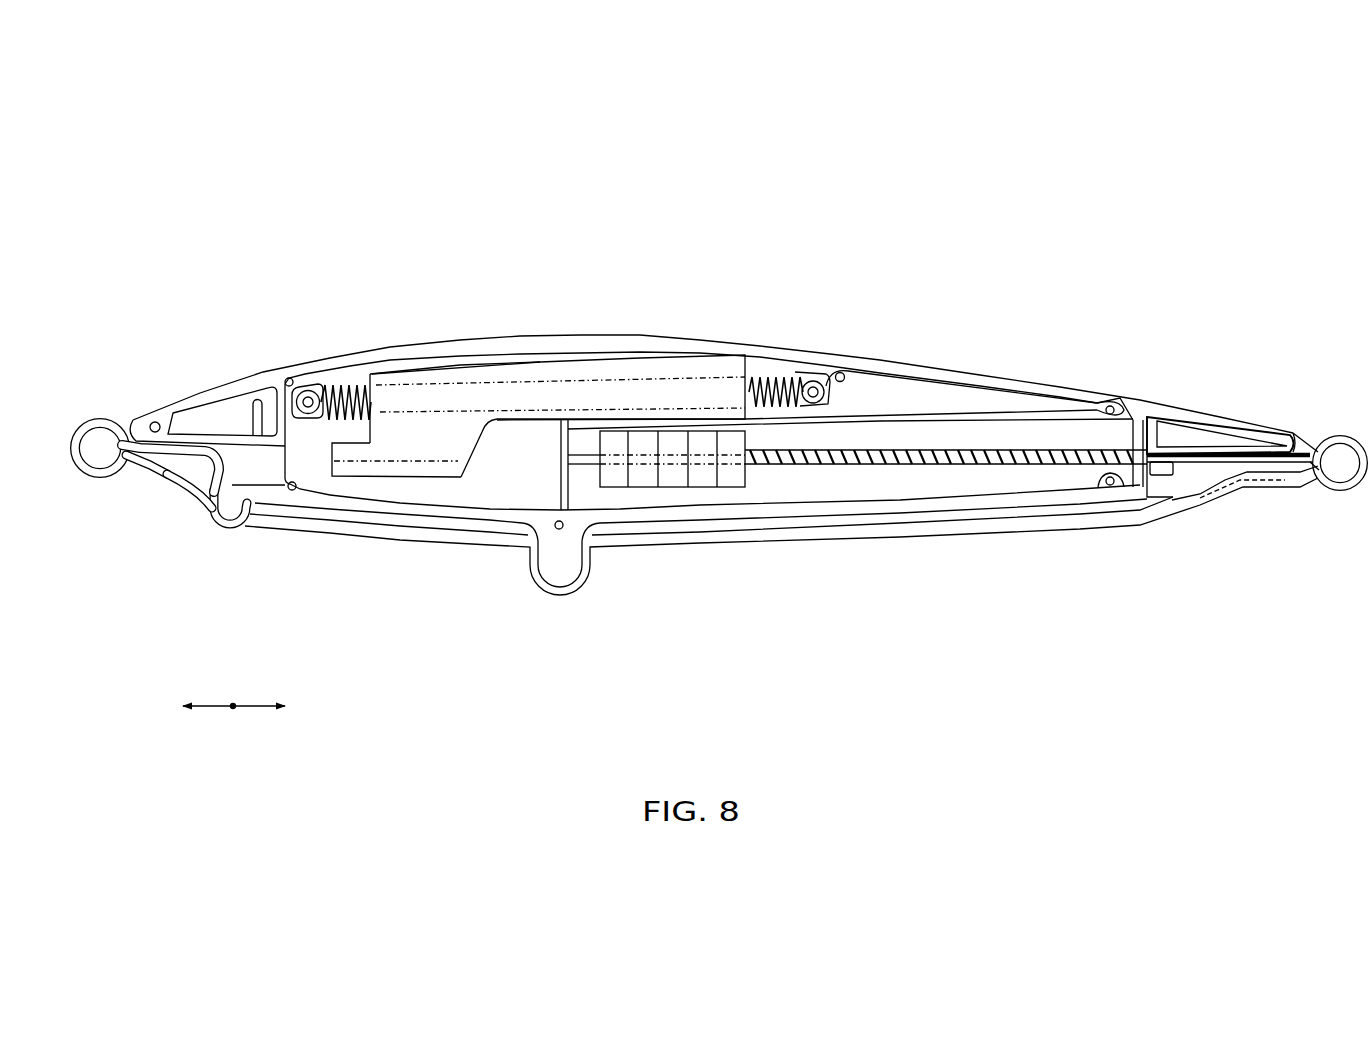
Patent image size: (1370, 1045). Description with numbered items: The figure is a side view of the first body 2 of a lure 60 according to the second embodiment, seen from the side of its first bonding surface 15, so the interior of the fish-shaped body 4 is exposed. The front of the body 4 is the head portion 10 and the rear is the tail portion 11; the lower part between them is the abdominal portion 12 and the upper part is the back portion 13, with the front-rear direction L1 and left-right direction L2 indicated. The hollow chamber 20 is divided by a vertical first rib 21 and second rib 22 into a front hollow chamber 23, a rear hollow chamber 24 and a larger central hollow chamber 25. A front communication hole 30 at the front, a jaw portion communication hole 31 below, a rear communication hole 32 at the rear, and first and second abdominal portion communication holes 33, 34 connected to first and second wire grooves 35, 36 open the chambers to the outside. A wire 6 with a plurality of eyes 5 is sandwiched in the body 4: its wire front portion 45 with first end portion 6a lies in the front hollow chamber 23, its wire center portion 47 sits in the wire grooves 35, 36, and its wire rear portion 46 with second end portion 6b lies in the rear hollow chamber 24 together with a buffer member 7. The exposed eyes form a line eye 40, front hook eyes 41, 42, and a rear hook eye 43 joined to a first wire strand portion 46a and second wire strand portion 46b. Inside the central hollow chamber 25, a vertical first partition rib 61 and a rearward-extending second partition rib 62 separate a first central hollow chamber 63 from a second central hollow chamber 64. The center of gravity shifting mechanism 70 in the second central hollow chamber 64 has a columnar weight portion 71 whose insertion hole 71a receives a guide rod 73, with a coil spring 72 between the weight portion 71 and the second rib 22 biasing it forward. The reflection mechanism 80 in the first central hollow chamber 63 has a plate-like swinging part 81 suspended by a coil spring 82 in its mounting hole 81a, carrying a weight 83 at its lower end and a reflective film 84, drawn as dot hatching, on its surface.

The lure 60 is at (1200, 252).
The first body 2 is at (1022, 372).
The body 4 is at (714, 362).
The wire 6 is at (992, 520).
The first end portion 6a is at (274, 413).
The second end portion 6b is at (1153, 478).
The buffer member 7 is at (1266, 446).
The head portion 10 is at (175, 398).
The tail portion 11 is at (1254, 450).
The abdominal portion 12 is at (643, 548).
The back portion 13 is at (620, 350).
The first bonding surface 15 is at (900, 371).
The hollow chamber 20 is at (700, 474).
The first rib 21 is at (283, 438).
The second rib 22 is at (1138, 432).
The front hollow chamber 23 is at (220, 424).
The rear hollow chamber 24 is at (1155, 415).
The central hollow chamber 25 is at (735, 556).
The front communication hole 30 is at (124, 472).
The jaw portion communication hole 31 is at (205, 512).
The rear communication hole 32 is at (1300, 452).
The first abdominal portion communication hole 33 is at (530, 550).
The second abdominal portion communication hole 34 is at (586, 550).
The first wire groove 35 is at (386, 522).
The second wire groove 36 is at (856, 520).
The line eye 40 is at (98, 418).
The front hook eye 41 is at (247, 530).
The front hook eye 42 is at (560, 592).
The rear hook eye 43 is at (1335, 492).
The wire front portion 45 is at (182, 474).
The wire rear portion 46 is at (1203, 492).
The first wire strand portion 46a is at (1250, 485).
The second wire strand portion 46b is at (1213, 452).
The wire center portion 47 is at (758, 532).
The eyes 5 is at (720, 503).
The first partition rib 61 is at (560, 469).
The second partition rib 62 is at (958, 408).
The first central hollow chamber 63 is at (470, 488).
The second central hollow chamber 64 is at (922, 492).
The center of gravity shifting mechanism 70 is at (756, 476).
The weight portion 71 is at (678, 485).
The insertion hole 71a is at (712, 458).
The coil spring 72 is at (1032, 467).
The guide rod 73 is at (1076, 465).
The reflection mechanism 80 is at (522, 333).
The swinging part 81 is at (568, 356).
The mounting hole 81a is at (468, 364).
The coil spring 82 is at (352, 393).
The weight 83 is at (363, 478).
The reflective film 84 is at (675, 386).
The front-rear direction L1 is at (249, 710).
The left-right direction L2 is at (231, 710).